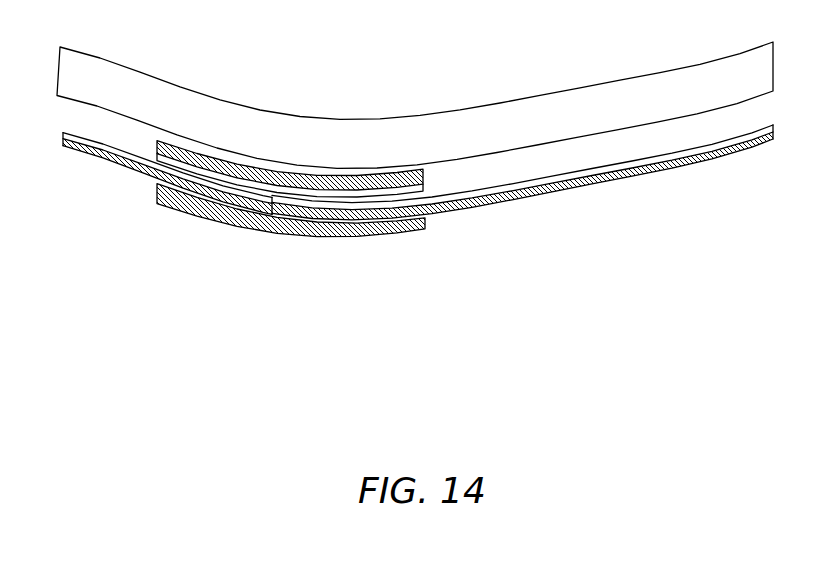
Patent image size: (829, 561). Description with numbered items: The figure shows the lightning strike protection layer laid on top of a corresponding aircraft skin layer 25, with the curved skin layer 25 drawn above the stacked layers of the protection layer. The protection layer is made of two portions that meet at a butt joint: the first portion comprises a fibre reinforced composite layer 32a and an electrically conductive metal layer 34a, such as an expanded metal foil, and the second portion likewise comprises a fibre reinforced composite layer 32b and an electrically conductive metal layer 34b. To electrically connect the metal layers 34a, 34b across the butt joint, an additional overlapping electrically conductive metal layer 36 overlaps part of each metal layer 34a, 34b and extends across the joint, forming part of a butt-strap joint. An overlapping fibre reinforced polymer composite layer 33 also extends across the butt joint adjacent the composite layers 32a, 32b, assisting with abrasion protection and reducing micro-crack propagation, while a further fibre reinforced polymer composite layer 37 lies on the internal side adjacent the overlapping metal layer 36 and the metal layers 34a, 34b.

The aircraft skin layer 25 is at (510, 128).
The additional electrically conductive metal layer 36 is at (353, 190).
The fibre reinforced polymer composite layer 37 is at (150, 144).
The electrically conductive metal layer 34a is at (95, 150).
The fibre reinforced composite layer 32a is at (112, 160).
The electrically conductive metal layer 34b is at (467, 198).
The fibre reinforced composite layer 32b is at (543, 197).
The overlapping fibre reinforced polymer composite layer 33 is at (313, 223).